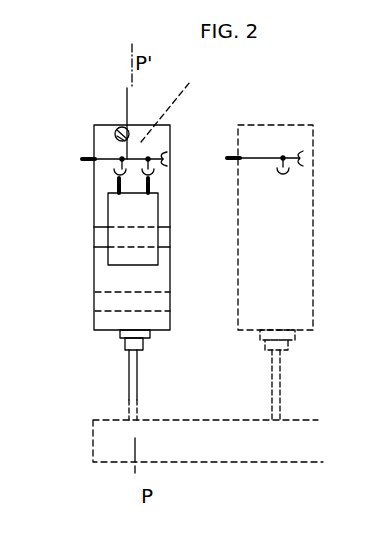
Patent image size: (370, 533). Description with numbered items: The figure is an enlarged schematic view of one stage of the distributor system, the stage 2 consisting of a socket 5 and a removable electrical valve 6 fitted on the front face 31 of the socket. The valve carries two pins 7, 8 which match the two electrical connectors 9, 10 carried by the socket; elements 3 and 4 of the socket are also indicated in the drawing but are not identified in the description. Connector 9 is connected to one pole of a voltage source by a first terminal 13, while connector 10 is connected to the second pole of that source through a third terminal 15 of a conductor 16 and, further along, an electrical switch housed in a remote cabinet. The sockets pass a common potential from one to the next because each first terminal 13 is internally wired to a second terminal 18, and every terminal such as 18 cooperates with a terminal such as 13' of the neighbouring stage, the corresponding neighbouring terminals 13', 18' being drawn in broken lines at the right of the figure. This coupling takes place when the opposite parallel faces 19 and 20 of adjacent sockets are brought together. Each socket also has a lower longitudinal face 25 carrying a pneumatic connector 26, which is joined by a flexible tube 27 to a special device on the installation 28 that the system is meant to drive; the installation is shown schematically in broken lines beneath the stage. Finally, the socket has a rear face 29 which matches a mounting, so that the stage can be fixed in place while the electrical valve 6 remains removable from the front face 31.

The measuring cell 2 is at (48, 258).
The lower chamber 3 is at (148, 297).
The partition 4 is at (160, 247).
The socket 5 is at (95, 286).
The removable electrical valve 6 is at (107, 262).
The pin 7 is at (152, 191).
The pin 8 is at (106, 190).
The electrical connector 9 is at (155, 172).
The electrical connector 10 is at (106, 171).
The first terminal 13 is at (103, 138).
The third terminal 15 is at (128, 129).
The conductor 16 is at (126, 106).
The second terminal 18 is at (181, 142).
The parallel face 19 is at (93, 251).
The parallel face 20 is at (170, 221).
The lower longitudinal face 25 is at (112, 338).
The pneumatic connector 26 is at (144, 344).
The flexible tube 27 is at (139, 390).
The installation 28 is at (93, 440).
The rear face 29 is at (179, 105).
The front face 31 is at (155, 276).
The terminal 13' is at (254, 138).
The terminal clip of second unit 18' is at (329, 134).